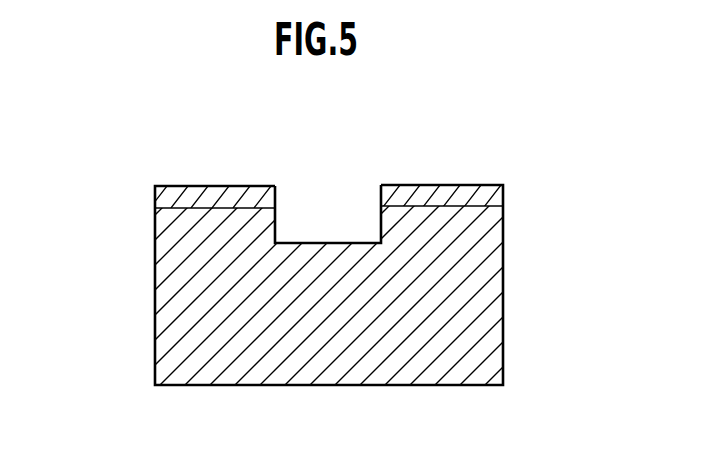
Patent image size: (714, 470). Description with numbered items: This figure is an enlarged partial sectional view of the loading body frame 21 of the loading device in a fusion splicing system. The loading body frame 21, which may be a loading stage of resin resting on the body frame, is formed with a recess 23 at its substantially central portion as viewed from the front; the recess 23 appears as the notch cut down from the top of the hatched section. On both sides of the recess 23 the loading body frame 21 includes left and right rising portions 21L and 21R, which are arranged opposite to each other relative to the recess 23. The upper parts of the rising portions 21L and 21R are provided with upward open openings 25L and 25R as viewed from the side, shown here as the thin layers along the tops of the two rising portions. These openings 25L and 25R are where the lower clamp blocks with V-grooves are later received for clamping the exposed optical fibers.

The loading body frame 21 is at (477, 325).
The left rising portion 21L is at (175, 238).
The right rising portion 21R is at (480, 229).
The recess 23 is at (328, 217).
The left opening 25L is at (174, 204).
The right opening 25R is at (494, 200).